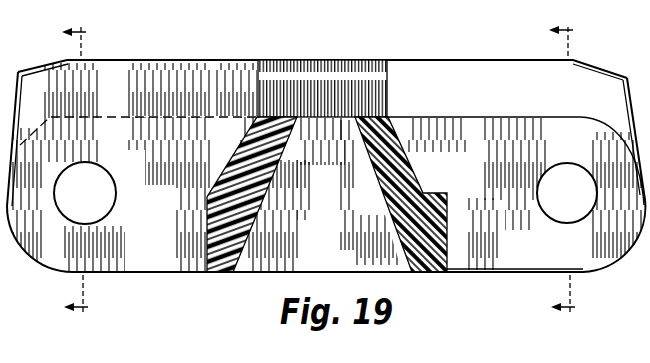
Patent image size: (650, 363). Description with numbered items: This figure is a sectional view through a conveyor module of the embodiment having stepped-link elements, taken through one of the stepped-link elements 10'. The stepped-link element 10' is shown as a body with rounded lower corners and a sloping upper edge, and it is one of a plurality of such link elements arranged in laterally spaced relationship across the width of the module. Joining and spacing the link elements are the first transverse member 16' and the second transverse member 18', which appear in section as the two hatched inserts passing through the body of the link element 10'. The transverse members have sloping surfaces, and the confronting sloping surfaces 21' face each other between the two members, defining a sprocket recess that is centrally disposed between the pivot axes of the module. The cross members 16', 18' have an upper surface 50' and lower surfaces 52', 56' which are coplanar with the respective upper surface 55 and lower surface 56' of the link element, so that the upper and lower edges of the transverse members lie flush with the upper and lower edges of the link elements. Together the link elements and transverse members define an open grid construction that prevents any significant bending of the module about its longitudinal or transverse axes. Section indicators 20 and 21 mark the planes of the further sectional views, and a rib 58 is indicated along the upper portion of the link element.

The stepped-link element 10' is at (326, 172).
The first transverse member 16' is at (251, 180).
The second transverse member 18' is at (401, 176).
The section line 20- 20 is at (90, 168).
The section line 21- 21 is at (574, 165).
The confronting sloping surfaces 21' is at (317, 195).
The upper surface of cross member 50' is at (320, 75).
The lower surface of cross member 52' is at (233, 288).
The upper surface of link element 55 is at (537, 117).
The lower surface of link element 56' is at (442, 286).
The top wall 58 is at (136, 75).